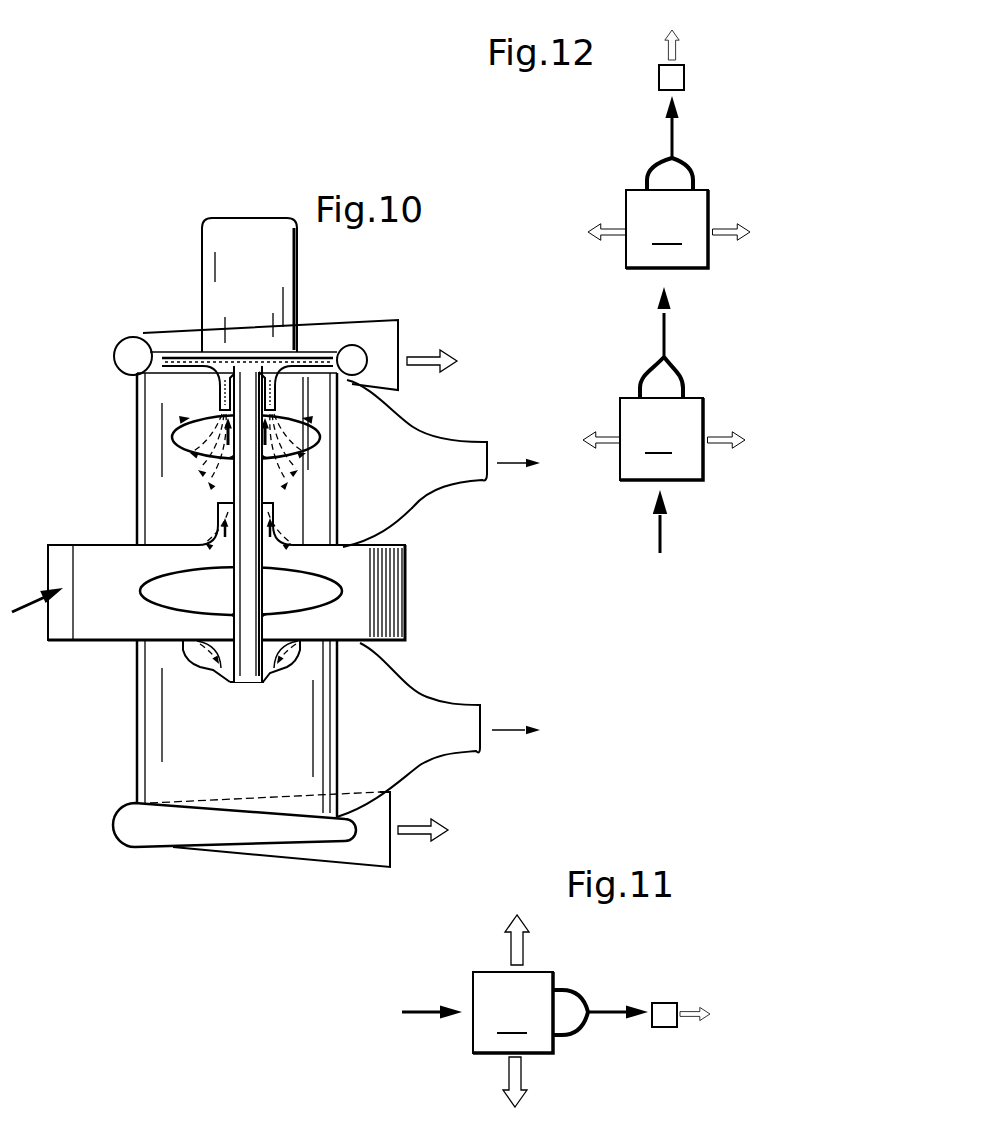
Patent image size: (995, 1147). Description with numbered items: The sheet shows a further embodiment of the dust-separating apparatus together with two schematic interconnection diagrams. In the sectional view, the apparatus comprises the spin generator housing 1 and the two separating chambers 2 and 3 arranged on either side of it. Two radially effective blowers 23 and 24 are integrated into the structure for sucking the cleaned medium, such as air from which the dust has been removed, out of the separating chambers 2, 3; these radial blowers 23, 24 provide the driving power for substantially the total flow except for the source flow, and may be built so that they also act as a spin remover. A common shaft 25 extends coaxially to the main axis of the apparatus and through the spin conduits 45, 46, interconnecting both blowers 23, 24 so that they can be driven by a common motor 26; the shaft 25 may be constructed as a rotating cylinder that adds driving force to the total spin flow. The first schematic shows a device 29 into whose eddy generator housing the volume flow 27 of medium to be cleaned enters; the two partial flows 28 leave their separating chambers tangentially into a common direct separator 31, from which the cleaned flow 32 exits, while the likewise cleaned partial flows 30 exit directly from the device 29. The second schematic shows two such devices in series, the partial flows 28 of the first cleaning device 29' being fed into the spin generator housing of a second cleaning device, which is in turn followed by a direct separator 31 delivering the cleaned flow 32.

In FIG. 10, the spin generator housing 1 is at (407, 558).
In FIG. 10, the separating chamber 2 is at (137, 412).
In FIG. 10, the separating chamber 3 is at (135, 695).
In FIG. 10, the radial blower 23 is at (310, 357).
In FIG. 10, the radial blower 24 is at (300, 840).
In FIG. 10, the common shaft 25 is at (250, 590).
In FIG. 10, the common motor 26 is at (220, 232).
In FIG. 12, the volume flow 27 is at (658, 530).
In FIG. 11, the volume flow 27 is at (422, 1009).
In FIG. 12, the partial flows 28 is at (655, 167).
In FIG. 11, the partial flows 28 is at (623, 1008).
In FIG. 11, the cleaning device 29 is at (513, 1012).
In FIG. 12, the first cleaning device 29' is at (661, 439).
In FIG. 12, the cleaned partial flows 30 is at (602, 227).
In FIG. 11, the cleaned partial flows 30 is at (528, 941).
In FIG. 12, the direct separator 31 is at (660, 80).
In FIG. 11, the direct separator 31 is at (659, 1003).
In FIG. 12, the cleaned flow 32 is at (666, 41).
In FIG. 11, the cleaned flow 32 is at (688, 1012).
In FIG. 10, the spin conduit 45 is at (277, 401).
In FIG. 10, the spin conduit 46 is at (273, 513).